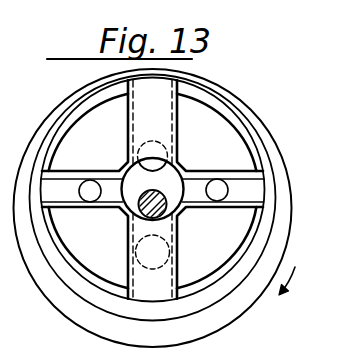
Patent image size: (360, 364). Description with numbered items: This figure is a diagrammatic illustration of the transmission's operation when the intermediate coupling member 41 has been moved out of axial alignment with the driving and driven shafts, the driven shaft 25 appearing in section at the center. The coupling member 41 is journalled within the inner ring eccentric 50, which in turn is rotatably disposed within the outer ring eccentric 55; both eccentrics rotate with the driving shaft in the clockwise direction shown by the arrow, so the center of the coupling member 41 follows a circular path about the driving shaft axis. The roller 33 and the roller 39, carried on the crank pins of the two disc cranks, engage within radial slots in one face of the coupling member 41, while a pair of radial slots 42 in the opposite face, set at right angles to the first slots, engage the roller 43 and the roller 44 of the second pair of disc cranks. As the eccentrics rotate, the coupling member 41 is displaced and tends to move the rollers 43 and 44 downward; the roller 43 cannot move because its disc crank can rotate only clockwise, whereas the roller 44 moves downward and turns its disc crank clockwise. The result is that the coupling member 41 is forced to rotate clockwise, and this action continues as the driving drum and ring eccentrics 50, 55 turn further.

The driven shaft 25 is at (139, 216).
The roller 33 is at (172, 140).
The roller 39 is at (171, 265).
The intermediate coupling member 41 is at (200, 92).
The radial slots 42 is at (57, 177).
The roller 43 is at (86, 201).
The roller 44 is at (213, 181).
The inner ring eccentric 50 is at (248, 126).
The outer ring eccentric 55 is at (287, 204).